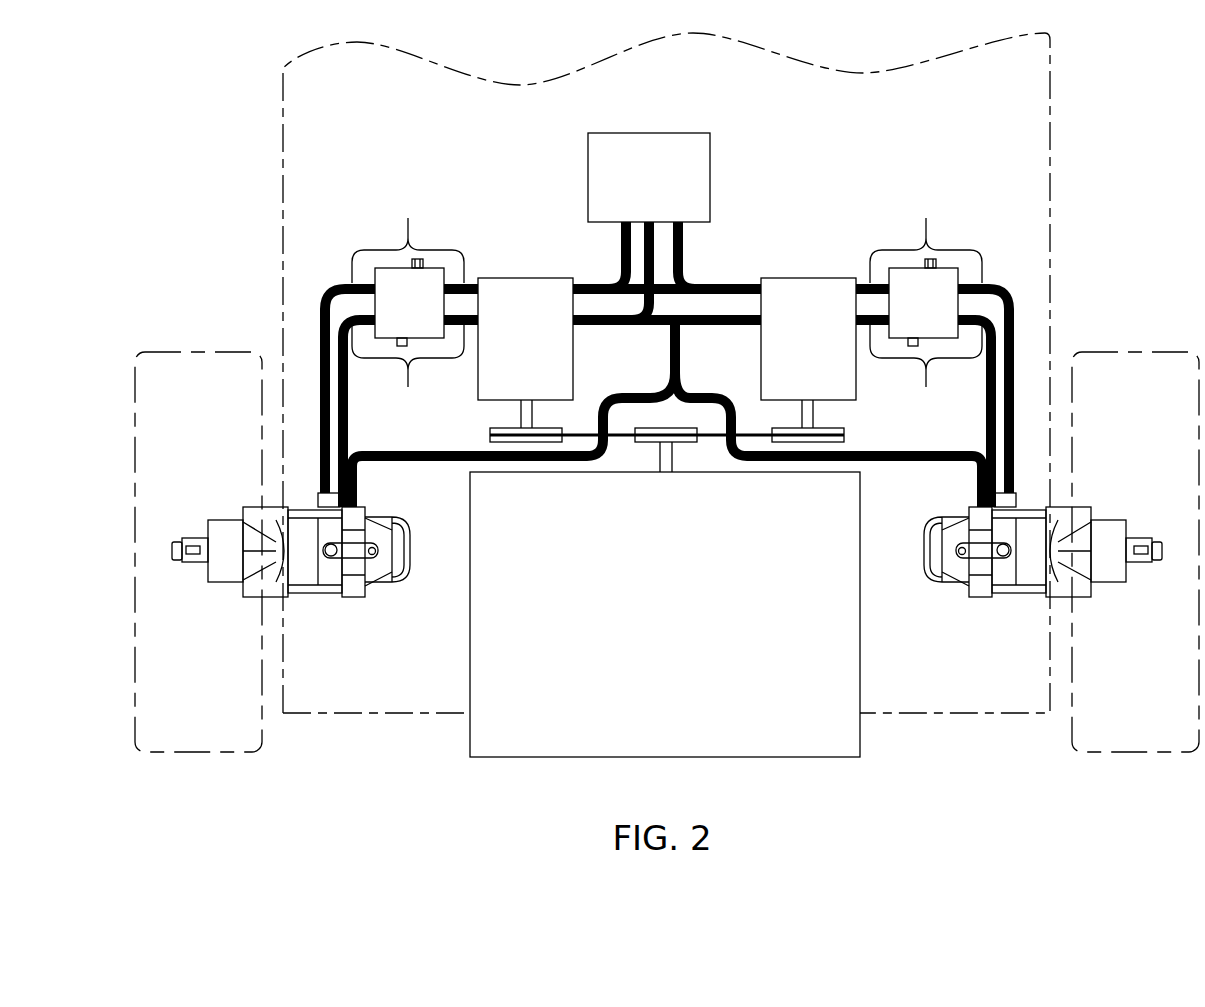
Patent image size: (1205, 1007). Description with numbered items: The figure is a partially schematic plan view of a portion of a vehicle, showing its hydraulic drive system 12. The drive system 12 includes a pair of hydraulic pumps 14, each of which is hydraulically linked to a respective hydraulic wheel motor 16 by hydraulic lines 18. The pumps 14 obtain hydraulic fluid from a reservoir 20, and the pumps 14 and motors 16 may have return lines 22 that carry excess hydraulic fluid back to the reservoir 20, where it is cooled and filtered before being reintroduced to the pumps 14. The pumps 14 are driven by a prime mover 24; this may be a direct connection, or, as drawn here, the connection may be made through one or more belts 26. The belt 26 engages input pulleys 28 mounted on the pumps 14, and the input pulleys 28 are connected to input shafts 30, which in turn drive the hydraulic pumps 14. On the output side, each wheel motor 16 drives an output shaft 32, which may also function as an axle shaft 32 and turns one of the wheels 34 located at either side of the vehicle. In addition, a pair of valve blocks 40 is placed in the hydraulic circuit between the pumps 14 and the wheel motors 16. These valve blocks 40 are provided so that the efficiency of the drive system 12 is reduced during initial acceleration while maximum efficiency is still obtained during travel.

The hydraulic drive system 12 is at (1082, 177).
The hydraulic pump 14 is at (512, 351).
The hydraulic wheel motor 16 is at (350, 598).
The hydraulic line 18 is at (667, 304).
The reservoir 20 is at (635, 189).
The return line 22 is at (597, 283).
The prime mover 24 is at (650, 622).
The belt 26 is at (713, 442).
The input pulley 28 is at (545, 442).
The input shaft 30 is at (521, 413).
The output shaft 32 is at (198, 562).
The wheel 34 is at (197, 752).
The valve block 40 is at (424, 314).